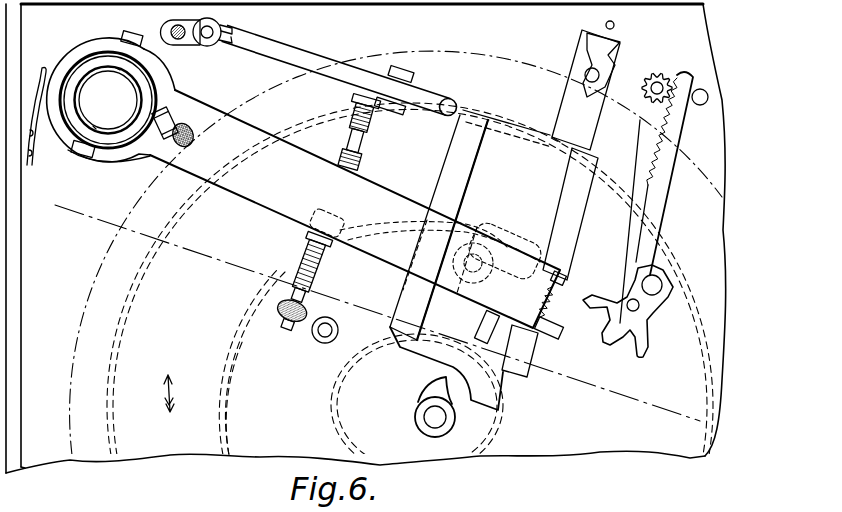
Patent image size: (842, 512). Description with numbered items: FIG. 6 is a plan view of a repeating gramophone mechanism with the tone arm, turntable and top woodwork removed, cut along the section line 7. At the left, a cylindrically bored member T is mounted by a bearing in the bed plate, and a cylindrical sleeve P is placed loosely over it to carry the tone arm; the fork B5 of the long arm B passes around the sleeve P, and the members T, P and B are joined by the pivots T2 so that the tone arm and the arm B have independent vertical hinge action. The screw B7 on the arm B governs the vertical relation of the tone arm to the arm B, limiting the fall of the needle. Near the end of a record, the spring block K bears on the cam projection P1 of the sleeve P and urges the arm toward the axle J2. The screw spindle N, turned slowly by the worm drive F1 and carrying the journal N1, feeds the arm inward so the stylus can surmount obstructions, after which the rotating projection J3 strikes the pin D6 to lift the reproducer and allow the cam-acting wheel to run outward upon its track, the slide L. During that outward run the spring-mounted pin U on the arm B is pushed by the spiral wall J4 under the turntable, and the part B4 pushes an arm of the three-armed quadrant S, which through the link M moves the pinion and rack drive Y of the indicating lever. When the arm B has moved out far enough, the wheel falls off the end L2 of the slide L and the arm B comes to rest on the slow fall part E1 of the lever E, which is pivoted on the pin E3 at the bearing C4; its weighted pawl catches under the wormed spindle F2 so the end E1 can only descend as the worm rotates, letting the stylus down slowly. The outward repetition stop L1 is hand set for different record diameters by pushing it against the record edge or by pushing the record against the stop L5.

The section line 7 is at (369, 325).
The cam projection P1 is at (50, 62).
The long arm B is at (355, 209).
The cylindrically bored member T is at (108, 100).
The cylindrical sleeve P is at (143, 110).
The pivots T2 is at (135, 33).
The fork B5 is at (97, 160).
The spring block K is at (43, 75).
The screw B7 is at (167, 110).
The wormed spindle F2 is at (217, 47).
The lever E is at (308, 53).
The slow fall part E1 is at (448, 102).
The pin E3 is at (401, 67).
The bearing C4 is at (394, 113).
The journal N1 is at (354, 157).
The end of slide L2 is at (528, 128).
The slide L is at (494, 262).
The outward repetition stop L1 is at (578, 50).
The stop L5 is at (604, 73).
The pinion and rack drive Y is at (660, 80).
The link M is at (652, 185).
The three-armed lever or quadrant S is at (655, 332).
The spring mounted pin U is at (563, 280).
The part of arm B B4 is at (548, 332).
The pin D6 is at (483, 330).
The screw spindle N is at (310, 252).
The worm drive F1 is at (316, 340).
The axle J2 is at (423, 415).
The projection J3 is at (442, 387).
The spiral wall J4 is at (229, 409).